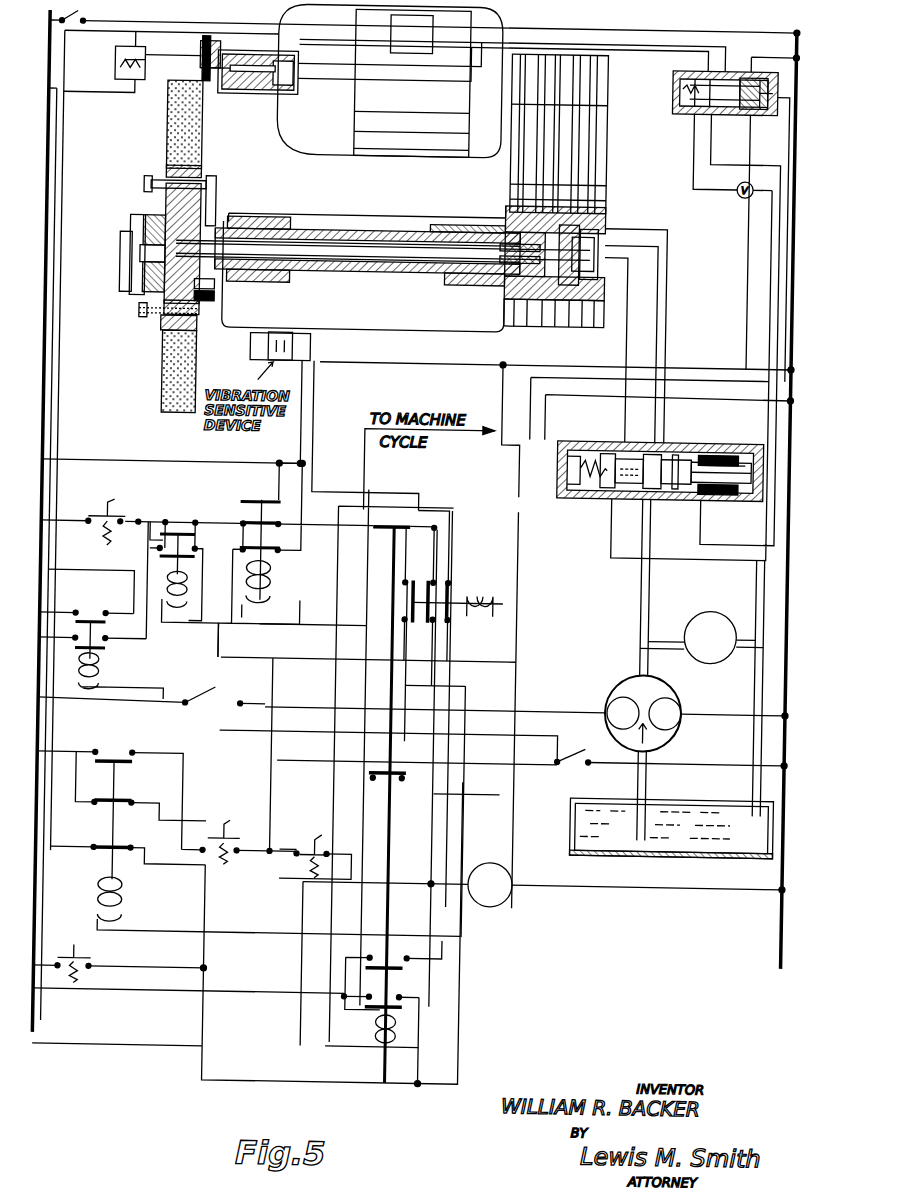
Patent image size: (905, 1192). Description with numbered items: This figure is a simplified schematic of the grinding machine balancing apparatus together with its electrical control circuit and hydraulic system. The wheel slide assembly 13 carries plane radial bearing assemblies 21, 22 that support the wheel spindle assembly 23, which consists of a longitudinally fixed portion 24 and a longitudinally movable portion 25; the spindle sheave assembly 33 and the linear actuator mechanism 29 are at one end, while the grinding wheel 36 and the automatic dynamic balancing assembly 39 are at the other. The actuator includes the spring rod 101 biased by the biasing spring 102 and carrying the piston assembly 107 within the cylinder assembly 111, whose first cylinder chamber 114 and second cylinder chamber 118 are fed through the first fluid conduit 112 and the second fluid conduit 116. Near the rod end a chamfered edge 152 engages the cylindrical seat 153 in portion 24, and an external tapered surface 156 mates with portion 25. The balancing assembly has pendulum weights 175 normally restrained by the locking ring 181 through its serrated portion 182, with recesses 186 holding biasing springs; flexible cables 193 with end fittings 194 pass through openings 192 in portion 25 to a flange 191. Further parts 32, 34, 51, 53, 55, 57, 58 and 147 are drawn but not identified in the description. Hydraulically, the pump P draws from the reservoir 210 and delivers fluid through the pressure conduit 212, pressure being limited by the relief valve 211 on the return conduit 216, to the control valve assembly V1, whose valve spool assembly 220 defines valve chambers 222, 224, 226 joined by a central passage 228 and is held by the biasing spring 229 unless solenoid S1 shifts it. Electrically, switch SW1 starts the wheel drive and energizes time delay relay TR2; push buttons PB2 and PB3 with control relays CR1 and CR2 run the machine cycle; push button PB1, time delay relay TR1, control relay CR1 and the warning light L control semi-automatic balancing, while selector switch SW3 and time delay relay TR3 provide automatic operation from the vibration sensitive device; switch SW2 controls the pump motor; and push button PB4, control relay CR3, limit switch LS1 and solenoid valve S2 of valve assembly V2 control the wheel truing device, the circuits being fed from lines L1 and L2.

The wheel slide assembly 13 is at (354, 320).
The plane radial bearing assembly 21 is at (287, 210).
The plane radial bearing assembly 22 is at (484, 224).
The wheel spindle assembly 23 is at (386, 279).
The first longitudinally relatively fixed portion 24 is at (466, 272).
The second portion relatively movable longitudinally 25 is at (199, 208).
The linear actuator mechanism 29 is at (629, 219).
The cooling fins 32 is at (609, 84).
The spindle sheave assembly 33 is at (609, 183).
The fin stack 34 is at (566, 139).
The grinding wheel 36 is at (169, 406).
The automatic dynamic balancing assembly 39 is at (117, 259).
The bearing race 51 is at (519, 279).
The nut 53 is at (147, 266).
The quill 55 is at (449, 232).
The collar 57 is at (214, 283).
The ring 58 is at (209, 298).
The spring rod 101 is at (402, 234).
The biasing spring 102 is at (506, 212).
The piston assembly 107 is at (602, 232).
The cylinder assembly 111 is at (584, 281).
The first fluid conduit 112 is at (671, 247).
The first cylinder chamber 114 is at (559, 291).
The second fluid conduit 116 is at (645, 331).
The second cylinder chamber 118 is at (600, 255).
The inner sleeve 147 is at (344, 274).
The chamfered edge 152 is at (294, 274).
The cylindrical seat 153 is at (297, 210).
The external tapered surface 156 is at (136, 266).
The pendulum weights 175 is at (144, 224).
The locking ring 181 is at (174, 178).
The serrated portion 182 is at (156, 193).
The recesses 186 is at (207, 78).
The flange 191 is at (220, 188).
The longitudinally extending openings 192 is at (164, 333).
The flexible cable 193 is at (201, 318).
The end fitting 194 is at (164, 316).
The sump or reservoir 210 is at (584, 818).
The relief valve 211 is at (729, 649).
The pressure conduit 212 is at (651, 590).
The return conduit 216 is at (766, 575).
The valve spool assembly 220 is at (608, 441).
The valve chamber 222 is at (620, 434).
The valve chamber 224 is at (653, 444).
The valve chamber 226 is at (688, 444).
The central passage 228 is at (698, 489).
The biasing spring 229 is at (568, 454).
The switch SW1 is at (425, 19).
The switch SW2 is at (152, 685).
The manually controlled selector switch SW3 is at (571, 769).
The limit switch LS1 is at (116, 60).
The control valve assembly V1 is at (598, 489).
The valve assembly V2 is at (701, 103).
The solenoid S1 is at (720, 489).
The solenoid valve S2 is at (763, 103).
The push button PB1 is at (103, 512).
The push button PB2 is at (236, 834).
The push button PB3 is at (313, 841).
The push button PB4 is at (105, 957).
The time delay relay TR1 is at (453, 598).
The time delay relay TR2 is at (184, 588).
The time delay relay TR3 is at (101, 654).
The control relay CR1 is at (256, 843).
The control relay CR2 is at (269, 542).
The control relay CR3 is at (386, 805).
The pump P is at (642, 758).
The warning light L is at (544, 886).
The line 1 L1 is at (50, 1013).
The line 2 L2 is at (797, 953).